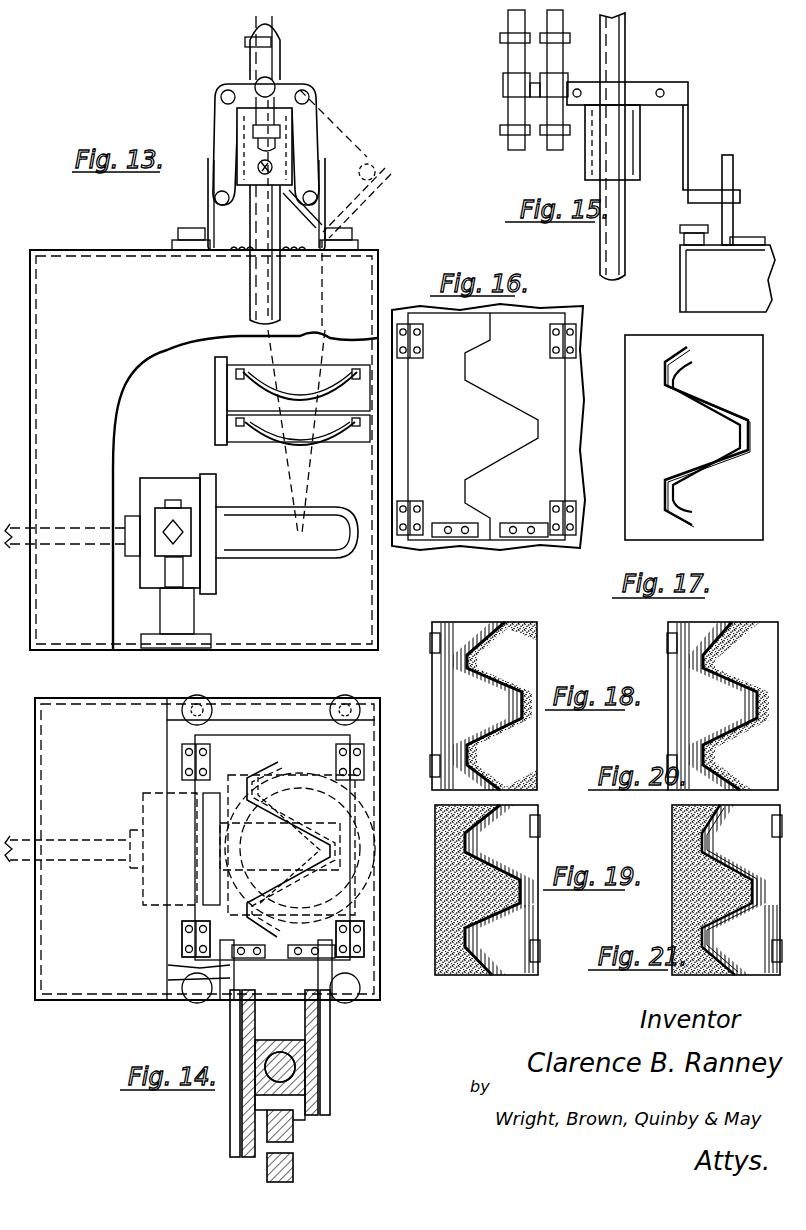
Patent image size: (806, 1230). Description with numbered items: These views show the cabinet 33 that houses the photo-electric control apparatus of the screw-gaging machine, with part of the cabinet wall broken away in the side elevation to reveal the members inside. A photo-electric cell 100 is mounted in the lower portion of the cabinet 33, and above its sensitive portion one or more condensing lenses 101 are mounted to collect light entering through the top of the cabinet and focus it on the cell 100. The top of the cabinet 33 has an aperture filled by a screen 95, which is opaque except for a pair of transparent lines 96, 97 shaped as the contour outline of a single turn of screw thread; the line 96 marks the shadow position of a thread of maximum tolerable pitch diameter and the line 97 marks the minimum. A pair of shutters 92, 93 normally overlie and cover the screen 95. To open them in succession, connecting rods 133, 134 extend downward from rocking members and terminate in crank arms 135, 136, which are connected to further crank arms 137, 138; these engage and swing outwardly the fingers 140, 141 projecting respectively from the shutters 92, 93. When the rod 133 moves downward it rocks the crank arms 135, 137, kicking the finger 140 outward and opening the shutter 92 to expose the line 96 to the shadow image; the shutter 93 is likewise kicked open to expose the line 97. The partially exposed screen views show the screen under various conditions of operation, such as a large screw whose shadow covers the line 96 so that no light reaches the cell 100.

In FIG. 13, the cabinet 33 is at (78, 272).
In FIG. 14, the cabinet 33 is at (92, 712).
In FIG. 15, the cabinet 33 is at (752, 260).
In FIG. 16, the cabinet 33 is at (572, 420).
In FIG. 14, the shutter 92 is at (312, 745).
In FIG. 16, the shutter 92 is at (523, 330).
In FIG. 19, the shutter 92 is at (538, 812).
In FIG. 21, the shutter 92 is at (740, 970).
In FIG. 14, the shutter 93 is at (246, 740).
In FIG. 16, the shutter 93 is at (440, 326).
In FIG. 18, the shutter 93 is at (448, 678).
In FIG. 20, the shutter 93 is at (675, 665).
In FIG. 17, the screen 95 is at (638, 345).
In FIG. 18, the screen 95 is at (525, 630).
In FIG. 20, the screen 95 is at (765, 628).
In FIG. 19, the screen 95 is at (440, 835).
In FIG. 21, the screen 95 is at (672, 822).
In FIG. 14, the transparent line 96 is at (292, 808).
In FIG. 17, the transparent line 96 is at (700, 363).
In FIG. 18, the transparent line 96 is at (494, 674).
In FIG. 20, the transparent line 96 is at (735, 676).
In FIG. 14, the transparent line 97 is at (265, 820).
In FIG. 17, the transparent line 97 is at (682, 348).
In FIG. 19, the transparent line 97 is at (470, 856).
In FIG. 21, the transparent line 97 is at (745, 870).
In FIG. 13, the photo-electric cell 100 is at (278, 548).
In FIG. 14, the photo-electric cell 100 is at (340, 822).
In FIG. 13, the condensing lenses 101 is at (264, 382).
In FIG. 14, the connecting rod 133 is at (293, 1133).
In FIG. 15, the connecting rod 133 is at (548, 22).
In FIG. 14, the connecting rod 134 is at (293, 1175).
In FIG. 15, the connecting rod 134 is at (515, 60).
In FIG. 14, the crank arm 135 is at (295, 1122).
In FIG. 14, the crank arm 136 is at (256, 1160).
In FIG. 13, the crank arm 137 is at (306, 128).
In FIG. 14, the crank arm 137 is at (335, 970).
In FIG. 15, the crank arm 137 is at (692, 146).
In FIG. 14, the crank arm 138 is at (200, 968).
In FIG. 13, the finger 140 is at (325, 182).
In FIG. 14, the finger 140 is at (356, 955).
In FIG. 15, the finger 140 is at (733, 178).
In FIG. 16, the finger 140 is at (545, 540).
In FIG. 13, the finger 141 is at (212, 194).
In FIG. 14, the finger 141 is at (182, 955).
In FIG. 16, the finger 141 is at (432, 540).